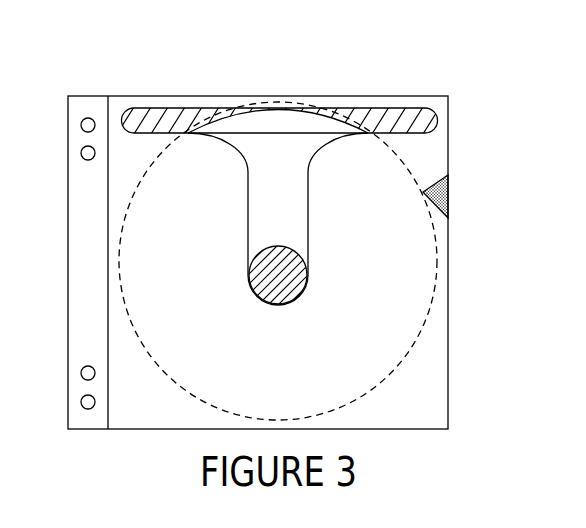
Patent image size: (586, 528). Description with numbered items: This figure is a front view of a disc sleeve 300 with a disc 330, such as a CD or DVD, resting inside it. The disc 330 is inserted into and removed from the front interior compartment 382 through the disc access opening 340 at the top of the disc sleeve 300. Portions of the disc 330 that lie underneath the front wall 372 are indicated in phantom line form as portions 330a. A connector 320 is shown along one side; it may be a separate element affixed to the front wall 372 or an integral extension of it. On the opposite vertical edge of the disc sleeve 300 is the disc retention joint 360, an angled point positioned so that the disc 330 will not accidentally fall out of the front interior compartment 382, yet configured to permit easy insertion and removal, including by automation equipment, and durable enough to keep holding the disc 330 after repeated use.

The disc sleeve 300 is at (263, 219).
The connector 320 is at (85, 315).
The disc 330 is at (293, 172).
The portions of the disc 330a is at (413, 295).
The disc access opening 340 is at (358, 122).
The disc retention joint 360 is at (430, 193).
The front wall 372 is at (430, 383).
The front interior compartment 382 is at (302, 214).